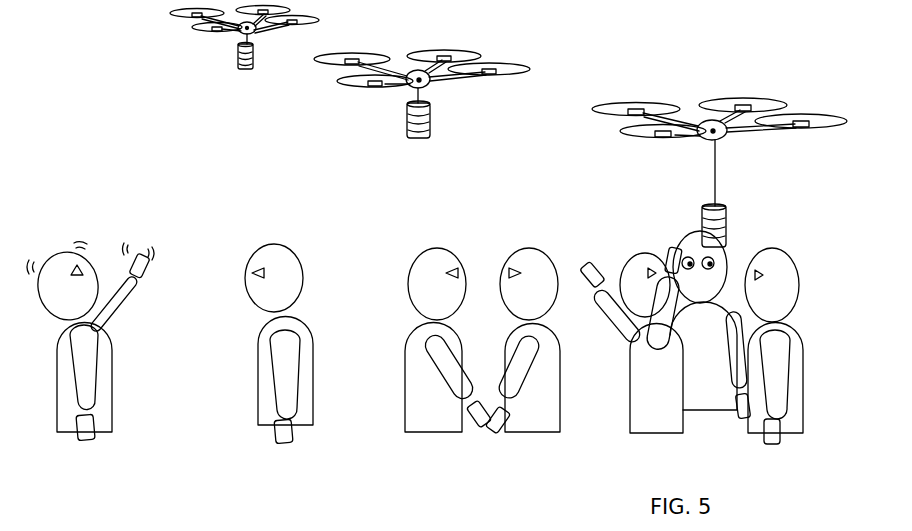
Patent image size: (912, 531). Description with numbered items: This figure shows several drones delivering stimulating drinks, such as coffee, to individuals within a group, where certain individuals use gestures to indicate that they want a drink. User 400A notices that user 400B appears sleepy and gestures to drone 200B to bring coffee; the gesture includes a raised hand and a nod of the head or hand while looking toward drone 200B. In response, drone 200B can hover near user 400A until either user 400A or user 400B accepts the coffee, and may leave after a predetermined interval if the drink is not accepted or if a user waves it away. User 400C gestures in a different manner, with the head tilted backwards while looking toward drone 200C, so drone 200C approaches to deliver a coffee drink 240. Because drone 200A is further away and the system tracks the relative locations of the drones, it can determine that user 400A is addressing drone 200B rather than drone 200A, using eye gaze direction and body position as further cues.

The drone 200A is at (185, 43).
The drone 200B is at (395, 102).
The drone 200C is at (722, 87).
The coffee drink 240 is at (236, 60).
The user 400A is at (125, 362).
The user 400B is at (247, 358).
The user 400C is at (618, 258).